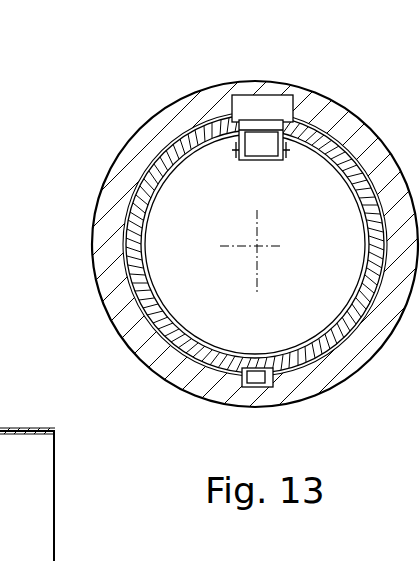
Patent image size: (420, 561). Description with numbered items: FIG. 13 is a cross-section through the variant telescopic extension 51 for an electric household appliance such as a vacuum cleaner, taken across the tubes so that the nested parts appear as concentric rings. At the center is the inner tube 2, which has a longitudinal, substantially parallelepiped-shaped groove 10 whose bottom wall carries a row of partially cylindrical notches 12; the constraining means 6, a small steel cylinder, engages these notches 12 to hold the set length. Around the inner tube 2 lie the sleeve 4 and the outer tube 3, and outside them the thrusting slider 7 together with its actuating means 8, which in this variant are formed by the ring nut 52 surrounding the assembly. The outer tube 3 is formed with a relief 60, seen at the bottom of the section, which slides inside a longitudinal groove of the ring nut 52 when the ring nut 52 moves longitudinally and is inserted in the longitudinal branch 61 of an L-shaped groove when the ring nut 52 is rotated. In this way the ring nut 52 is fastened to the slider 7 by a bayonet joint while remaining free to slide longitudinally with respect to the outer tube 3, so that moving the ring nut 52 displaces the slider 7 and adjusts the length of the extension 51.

The inner tube 2 is at (146, 230).
The outer tube 3 is at (132, 340).
The sleeve 4 is at (150, 297).
The constraining means 6 is at (268, 147).
The thrusting slider 7 is at (272, 108).
The actuating means 8 is at (319, 91).
The groove 10 is at (237, 150).
The notches 12 is at (253, 160).
The telescopic extension 51 is at (211, 90).
The ring nut 52 is at (340, 122).
The relief 60 is at (264, 390).
The longitudinal branch 61 is at (242, 386).